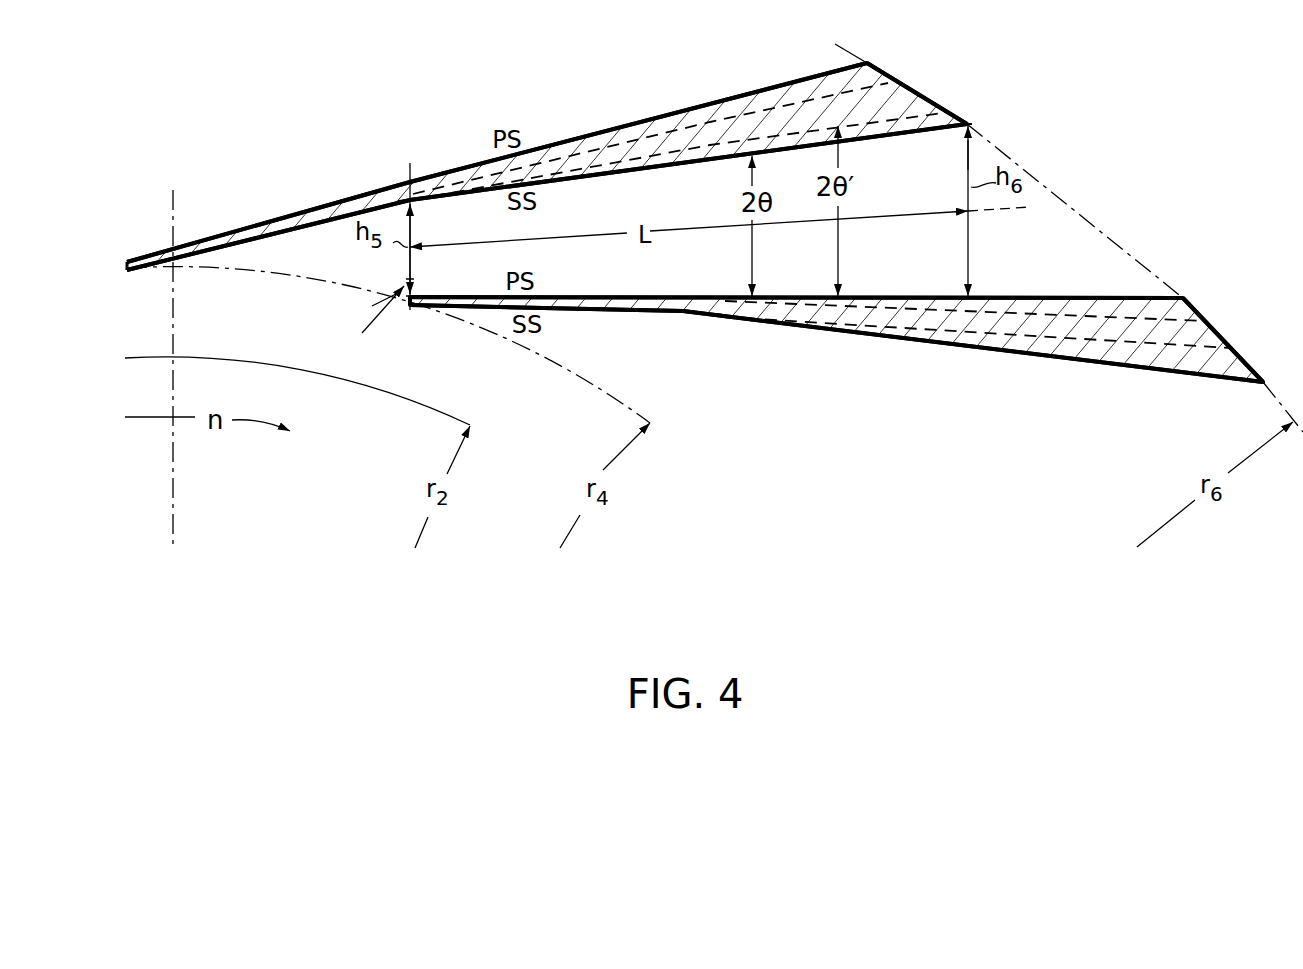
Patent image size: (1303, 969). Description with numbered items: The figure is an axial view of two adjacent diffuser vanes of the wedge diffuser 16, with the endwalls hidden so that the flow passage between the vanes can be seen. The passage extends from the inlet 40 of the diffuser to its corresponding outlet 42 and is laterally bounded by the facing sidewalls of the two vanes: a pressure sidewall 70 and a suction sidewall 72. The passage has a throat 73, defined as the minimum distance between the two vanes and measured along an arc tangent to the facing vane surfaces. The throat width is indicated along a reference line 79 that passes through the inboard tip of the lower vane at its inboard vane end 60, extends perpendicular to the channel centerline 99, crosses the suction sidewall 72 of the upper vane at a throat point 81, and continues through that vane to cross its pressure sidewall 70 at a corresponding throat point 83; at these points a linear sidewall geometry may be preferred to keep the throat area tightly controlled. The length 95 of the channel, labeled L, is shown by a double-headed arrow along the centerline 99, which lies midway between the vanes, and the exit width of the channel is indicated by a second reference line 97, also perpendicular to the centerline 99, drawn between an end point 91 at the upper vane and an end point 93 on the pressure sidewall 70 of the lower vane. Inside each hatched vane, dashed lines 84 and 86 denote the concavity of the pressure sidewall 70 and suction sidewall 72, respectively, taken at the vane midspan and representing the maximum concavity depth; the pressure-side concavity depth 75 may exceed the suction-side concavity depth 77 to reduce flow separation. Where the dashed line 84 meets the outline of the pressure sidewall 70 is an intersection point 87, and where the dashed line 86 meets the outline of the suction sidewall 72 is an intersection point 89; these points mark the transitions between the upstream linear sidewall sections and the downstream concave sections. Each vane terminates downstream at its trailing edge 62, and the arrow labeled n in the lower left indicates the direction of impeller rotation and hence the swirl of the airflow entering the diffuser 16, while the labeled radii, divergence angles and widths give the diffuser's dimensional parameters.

The wedge diffuser 16 is at (345, 97).
The inlet 40 is at (320, 272).
The outlet 42 is at (1046, 286).
The inboard vane end 60 is at (127, 262).
The trailing edge 62 is at (902, 86).
The pressure sidewall 70 is at (600, 130).
The suction sidewall 72 is at (889, 136).
The throat 73 is at (365, 322).
The concavity depth 75 is at (640, 134).
The concavity depth 77 is at (647, 158).
The reference line 79 is at (410, 181).
The throat point 81 is at (404, 200).
The corresponding throat point 83 is at (408, 180).
The dashed line 84 is at (758, 109).
The dashed line 86 is at (678, 150).
The intersection point 87 is at (412, 184).
The intersection point 89 is at (413, 203).
The trailing edge point 91 is at (974, 123).
The pressure side point 93 is at (973, 297).
The length 95 is at (889, 214).
The reference line 97 is at (970, 152).
The centerline 99 is at (1021, 208).